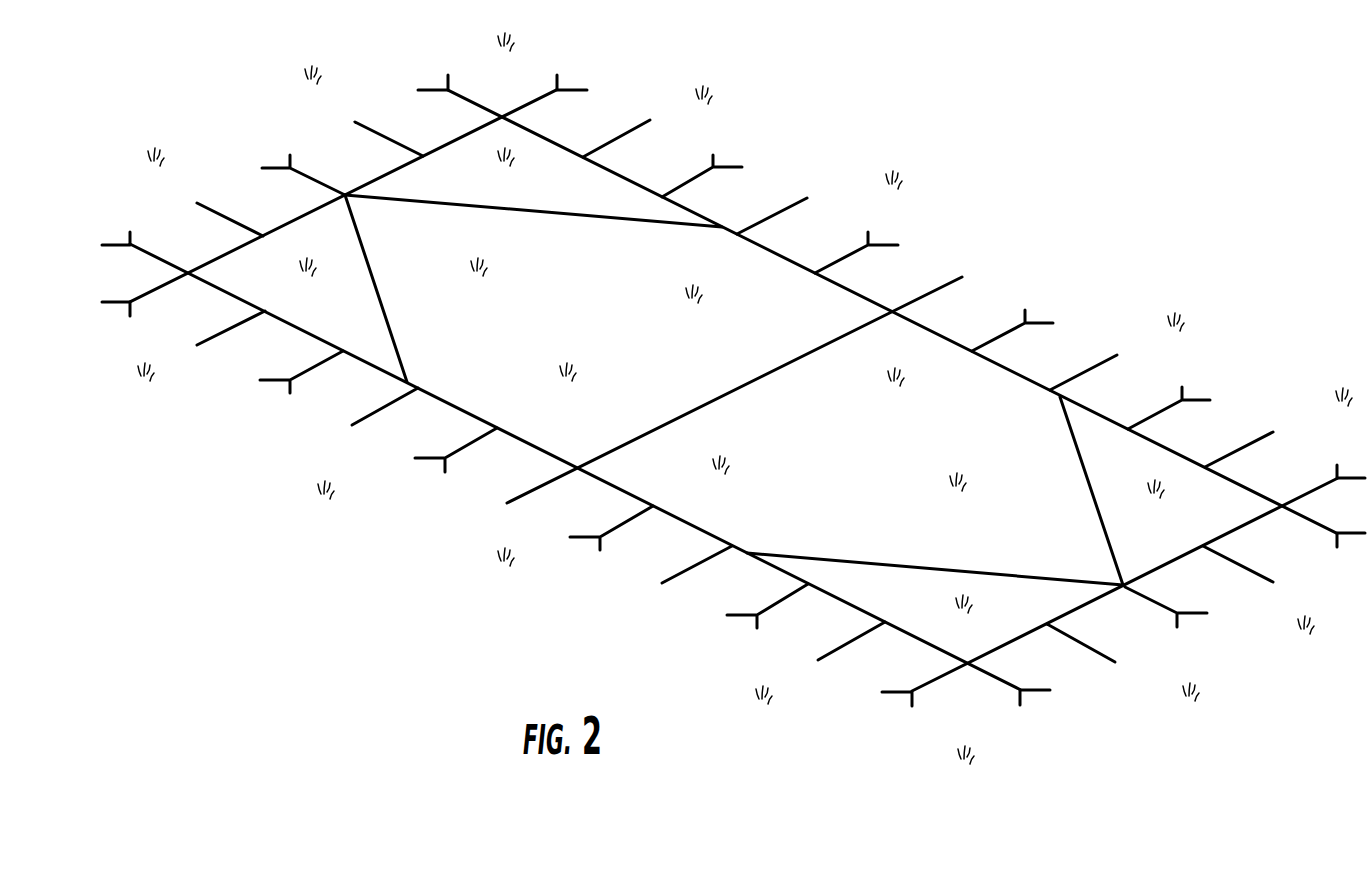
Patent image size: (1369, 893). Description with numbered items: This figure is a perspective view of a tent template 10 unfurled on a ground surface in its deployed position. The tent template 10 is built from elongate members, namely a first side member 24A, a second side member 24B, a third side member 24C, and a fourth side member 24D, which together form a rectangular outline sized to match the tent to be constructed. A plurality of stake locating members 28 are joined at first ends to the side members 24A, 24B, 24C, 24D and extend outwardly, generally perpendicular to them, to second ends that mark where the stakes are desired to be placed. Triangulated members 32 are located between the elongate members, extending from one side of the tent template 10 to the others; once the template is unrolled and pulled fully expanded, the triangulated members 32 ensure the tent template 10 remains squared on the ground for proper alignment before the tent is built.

The tent template 10 is at (1148, 156).
The first side member 24A is at (277, 227).
The second side member 24B is at (1262, 497).
The third side member 24C is at (1090, 603).
The fourth side member 24D is at (520, 445).
The stake locating members 28 is at (787, 207).
The triangulated members 32 is at (580, 216).